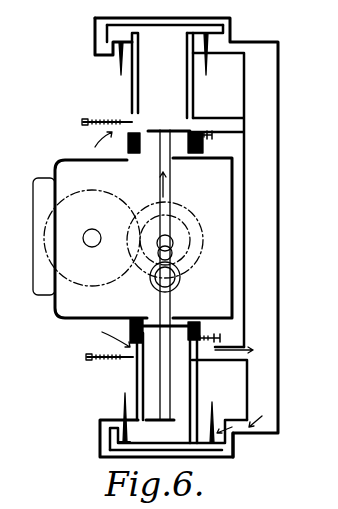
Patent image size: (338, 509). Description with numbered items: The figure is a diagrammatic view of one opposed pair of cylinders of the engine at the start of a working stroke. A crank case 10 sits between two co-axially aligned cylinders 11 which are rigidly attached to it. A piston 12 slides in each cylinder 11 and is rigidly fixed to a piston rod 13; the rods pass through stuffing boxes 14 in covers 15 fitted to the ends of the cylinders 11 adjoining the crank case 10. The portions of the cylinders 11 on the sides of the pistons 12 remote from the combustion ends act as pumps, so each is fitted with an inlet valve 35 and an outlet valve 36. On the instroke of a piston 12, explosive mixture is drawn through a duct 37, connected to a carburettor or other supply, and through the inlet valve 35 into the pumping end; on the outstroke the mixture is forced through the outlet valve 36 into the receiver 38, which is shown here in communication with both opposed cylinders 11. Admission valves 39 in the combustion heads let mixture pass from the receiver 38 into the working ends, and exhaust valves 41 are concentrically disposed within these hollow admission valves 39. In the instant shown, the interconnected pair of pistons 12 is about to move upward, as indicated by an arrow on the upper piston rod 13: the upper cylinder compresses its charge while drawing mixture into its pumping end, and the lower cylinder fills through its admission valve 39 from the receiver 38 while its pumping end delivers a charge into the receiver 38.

The crank case 10 is at (53, 168).
The cylinder 11 is at (83, 382).
The piston 12 is at (150, 432).
The piston rod 13 is at (172, 184).
The stuffing box 14 is at (148, 312).
The cover 15 is at (150, 155).
The inlet valve 35 is at (120, 112).
The outlet valve 36 is at (212, 110).
The duct 37 is at (93, 133).
The receiver 38 is at (278, 200).
The admission valve 39 is at (225, 33).
The exhaust valve 41 is at (110, 57).